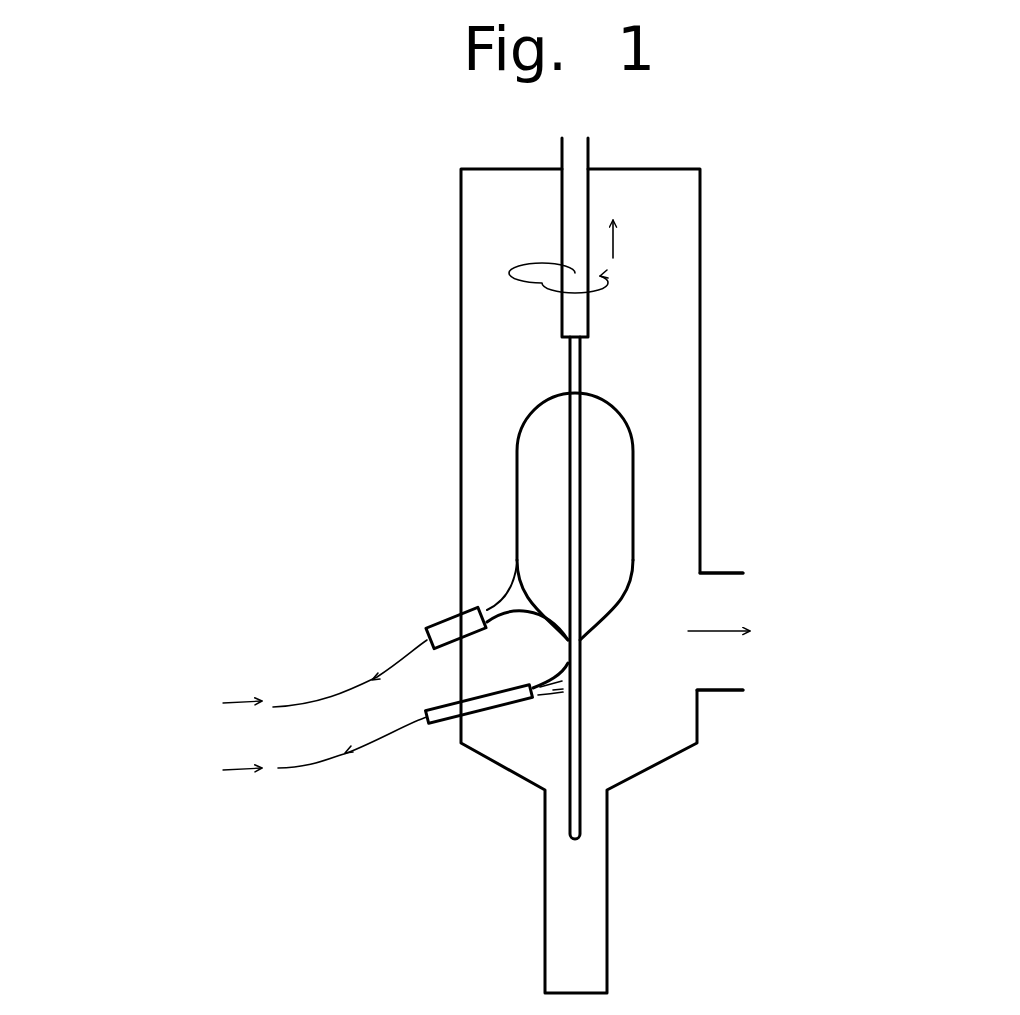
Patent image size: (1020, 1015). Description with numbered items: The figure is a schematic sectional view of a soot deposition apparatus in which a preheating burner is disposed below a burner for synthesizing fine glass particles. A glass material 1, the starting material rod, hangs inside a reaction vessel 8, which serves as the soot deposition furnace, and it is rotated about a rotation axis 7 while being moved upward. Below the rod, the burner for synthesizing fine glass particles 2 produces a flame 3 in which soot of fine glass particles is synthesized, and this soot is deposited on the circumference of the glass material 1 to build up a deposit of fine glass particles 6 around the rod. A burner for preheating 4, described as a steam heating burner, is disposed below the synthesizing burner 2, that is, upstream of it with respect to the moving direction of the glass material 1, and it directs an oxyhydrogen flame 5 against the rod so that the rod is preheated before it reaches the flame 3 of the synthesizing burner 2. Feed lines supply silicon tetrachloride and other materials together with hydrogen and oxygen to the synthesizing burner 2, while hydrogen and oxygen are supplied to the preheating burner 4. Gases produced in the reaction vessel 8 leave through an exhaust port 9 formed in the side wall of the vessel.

The glass material 1 is at (577, 490).
The burner for synthesizing fine glass particles 2 is at (438, 610).
The flame 3 is at (518, 590).
The burner for preheating 4 is at (452, 712).
The oxyhydrogen flame 5 is at (553, 700).
The deposit of fine glass particles 6 is at (593, 437).
The rotation axis 7 is at (577, 310).
The reaction vessel 8 is at (653, 770).
The exhaust port 9 is at (720, 680).